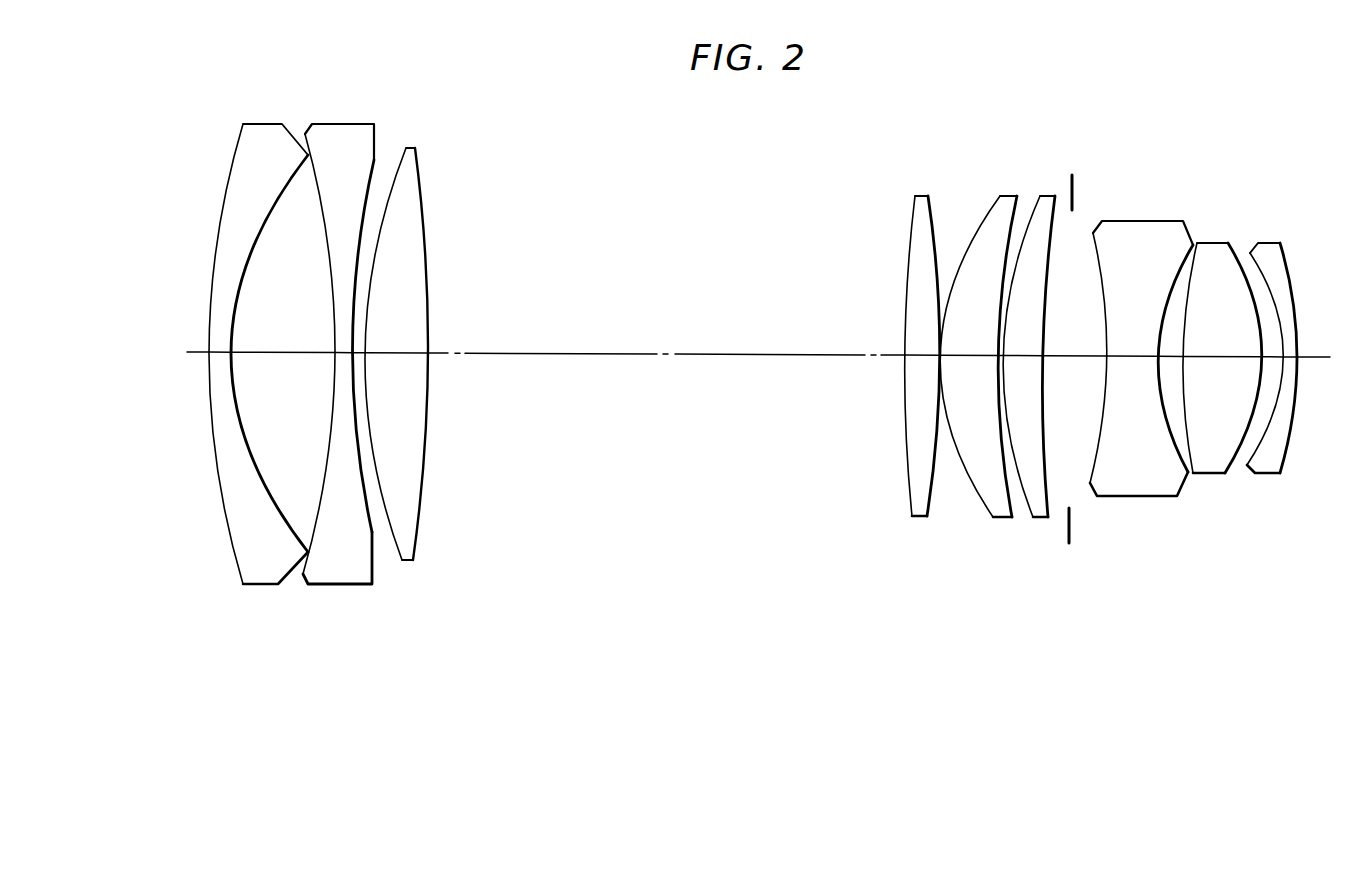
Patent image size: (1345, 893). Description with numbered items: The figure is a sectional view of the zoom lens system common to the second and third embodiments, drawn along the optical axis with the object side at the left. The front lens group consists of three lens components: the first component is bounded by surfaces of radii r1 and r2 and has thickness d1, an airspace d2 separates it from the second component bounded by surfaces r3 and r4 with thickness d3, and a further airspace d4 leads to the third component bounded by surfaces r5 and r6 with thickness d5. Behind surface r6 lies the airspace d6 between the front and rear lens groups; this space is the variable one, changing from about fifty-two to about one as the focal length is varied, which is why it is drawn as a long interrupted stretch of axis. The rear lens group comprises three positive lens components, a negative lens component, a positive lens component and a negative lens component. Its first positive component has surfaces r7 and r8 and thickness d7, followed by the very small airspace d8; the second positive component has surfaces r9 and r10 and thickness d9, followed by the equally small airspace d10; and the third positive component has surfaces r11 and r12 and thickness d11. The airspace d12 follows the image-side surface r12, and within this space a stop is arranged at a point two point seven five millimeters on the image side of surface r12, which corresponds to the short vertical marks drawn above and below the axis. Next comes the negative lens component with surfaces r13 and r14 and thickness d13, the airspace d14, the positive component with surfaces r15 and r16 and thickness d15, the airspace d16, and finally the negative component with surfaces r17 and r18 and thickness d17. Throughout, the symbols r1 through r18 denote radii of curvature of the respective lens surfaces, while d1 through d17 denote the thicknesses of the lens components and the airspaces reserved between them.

The thickness of first lens component d1 is at (222, 352).
The airspace between first and second lens components d2 is at (280, 353).
The thickness of second lens component d3 is at (345, 356).
The airspace between second and third lens components d4 is at (362, 356).
The thickness of third lens component d5 is at (388, 353).
The variable airspace between front and rear lens groups d6 is at (645, 354).
The thickness of first positive lens component of rear lens group d7 is at (920, 355).
The airspace between first and second positive lens components of rear group d8 is at (940, 359).
The thickness of second positive lens component of rear lens group d9 is at (967, 355).
The airspace between second and third positive lens components of rear group d10 is at (1002, 359).
The thickness of third positive lens component of rear lens group d11 is at (1020, 355).
The airspace between third positive lens component and negative lens component d12 is at (1070, 355).
The thickness of negative lens component of rear lens group d13 is at (1130, 357).
The airspace between negative lens component and following positive lens component d14 is at (1170, 360).
The thickness of positive lens component following the negative lens component d15 is at (1217, 357).
The airspace between positive lens component and final negative lens component d16 is at (1267, 360).
The thickness of final negative lens component d17 is at (1290, 357).
The radius of curvature of first surface r1 is at (238, 572).
The radius of curvature of second surface r2 is at (298, 548).
The radius of curvature of third surface r3 is at (322, 540).
The radius of curvature of fourth surface r4 is at (366, 535).
The radius of curvature of fifth surface r5 is at (396, 550).
The radius of curvature of sixth surface r6 is at (420, 540).
The radius of curvature of seventh surface r7 is at (910, 502).
The radius of curvature of eighth surface r8 is at (930, 502).
The radius of curvature of ninth surface r9 is at (982, 500).
The radius of curvature of tenth surface r10 is at (1002, 503).
The radius of curvature of eleventh surface r11 is at (1028, 503).
The radius of curvature of twelfth surface r12 is at (1052, 502).
The radius of curvature of thirteenth surface r13 is at (1095, 462).
The radius of curvature of fourteenth surface r14 is at (1178, 458).
The radius of curvature of fifteenth surface r15 is at (1193, 455).
The radius of curvature of sixteenth surface r16 is at (1237, 460).
The radius of curvature of seventeenth surface r17 is at (1258, 450).
The radius of curvature of eighteenth surface r18 is at (1288, 455).